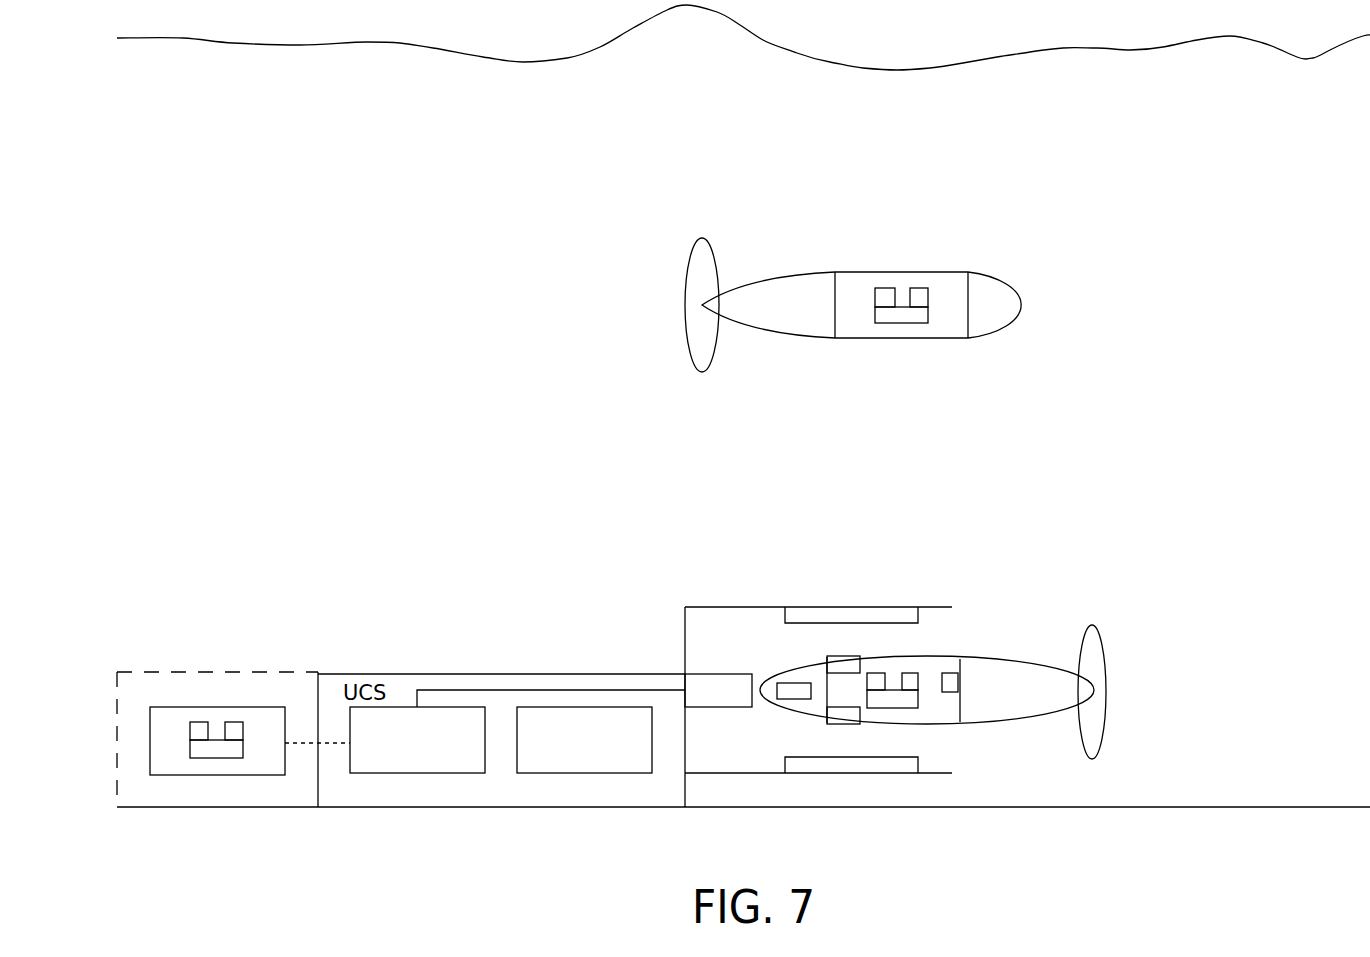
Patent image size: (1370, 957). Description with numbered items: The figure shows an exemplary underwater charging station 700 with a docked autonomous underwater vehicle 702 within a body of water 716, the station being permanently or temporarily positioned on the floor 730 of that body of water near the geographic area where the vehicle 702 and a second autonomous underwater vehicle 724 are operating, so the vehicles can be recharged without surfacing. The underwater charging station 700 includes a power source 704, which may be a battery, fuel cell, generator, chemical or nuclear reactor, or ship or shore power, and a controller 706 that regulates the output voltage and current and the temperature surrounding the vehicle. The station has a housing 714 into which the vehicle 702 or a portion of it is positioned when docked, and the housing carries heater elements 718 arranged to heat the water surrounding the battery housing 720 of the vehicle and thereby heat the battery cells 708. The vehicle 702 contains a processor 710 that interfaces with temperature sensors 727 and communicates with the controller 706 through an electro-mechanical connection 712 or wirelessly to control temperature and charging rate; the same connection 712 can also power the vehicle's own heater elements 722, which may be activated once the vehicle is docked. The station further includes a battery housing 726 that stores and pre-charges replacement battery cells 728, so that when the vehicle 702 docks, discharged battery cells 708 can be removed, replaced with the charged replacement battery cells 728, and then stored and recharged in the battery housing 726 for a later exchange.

The underwater charging station 700 is at (433, 572).
The autonomous underwater vehicle 702 is at (1050, 658).
The power source 704 is at (437, 765).
The controller 706 is at (603, 765).
The battery cells 708 is at (922, 708).
The processor 710 is at (790, 678).
The electro-mechanical connection 712 is at (715, 672).
The housing 714 is at (942, 607).
The body of water 716 is at (353, 166).
The heater elements 718 is at (860, 607).
The battery housing 720 is at (913, 655).
The heater elements 722 is at (840, 653).
The autonomous underwater vehicle 724 is at (822, 270).
The battery housing 726 is at (182, 672).
The temperature sensors 727 is at (958, 668).
The replacement battery cells 728 is at (218, 705).
The floor 730 is at (1353, 835).